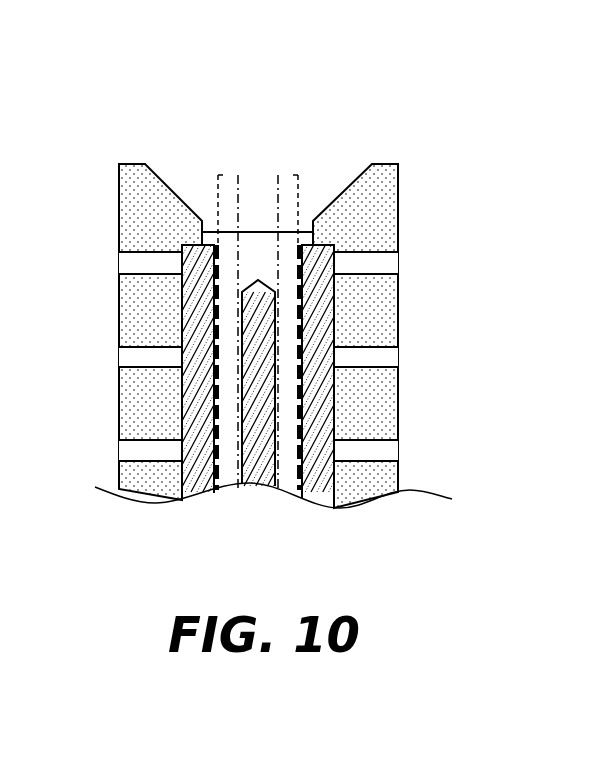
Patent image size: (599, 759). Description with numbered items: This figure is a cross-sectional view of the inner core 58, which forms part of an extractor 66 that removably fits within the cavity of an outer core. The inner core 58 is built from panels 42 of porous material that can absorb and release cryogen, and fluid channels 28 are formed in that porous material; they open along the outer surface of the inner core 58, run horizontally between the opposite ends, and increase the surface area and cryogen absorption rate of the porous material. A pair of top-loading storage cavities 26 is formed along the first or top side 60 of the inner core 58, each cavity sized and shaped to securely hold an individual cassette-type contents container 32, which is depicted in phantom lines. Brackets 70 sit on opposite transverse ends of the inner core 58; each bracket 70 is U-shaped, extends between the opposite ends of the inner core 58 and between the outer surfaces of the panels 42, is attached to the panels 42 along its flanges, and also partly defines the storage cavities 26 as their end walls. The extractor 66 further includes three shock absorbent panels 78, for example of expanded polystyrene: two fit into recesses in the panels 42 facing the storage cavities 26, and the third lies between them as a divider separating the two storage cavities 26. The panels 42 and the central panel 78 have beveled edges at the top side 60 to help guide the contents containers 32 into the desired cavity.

The extractor 66 is at (372, 108).
The first or top side 60 is at (130, 185).
The panels 42 is at (385, 175).
The fluid channels 28 is at (125, 357).
The inner core 58 is at (118, 432).
The brackets 70 is at (260, 232).
The shock absorbent panels 78 is at (317, 493).
The storage cavities 26 is at (227, 252).
The contents containers 32 is at (293, 185).